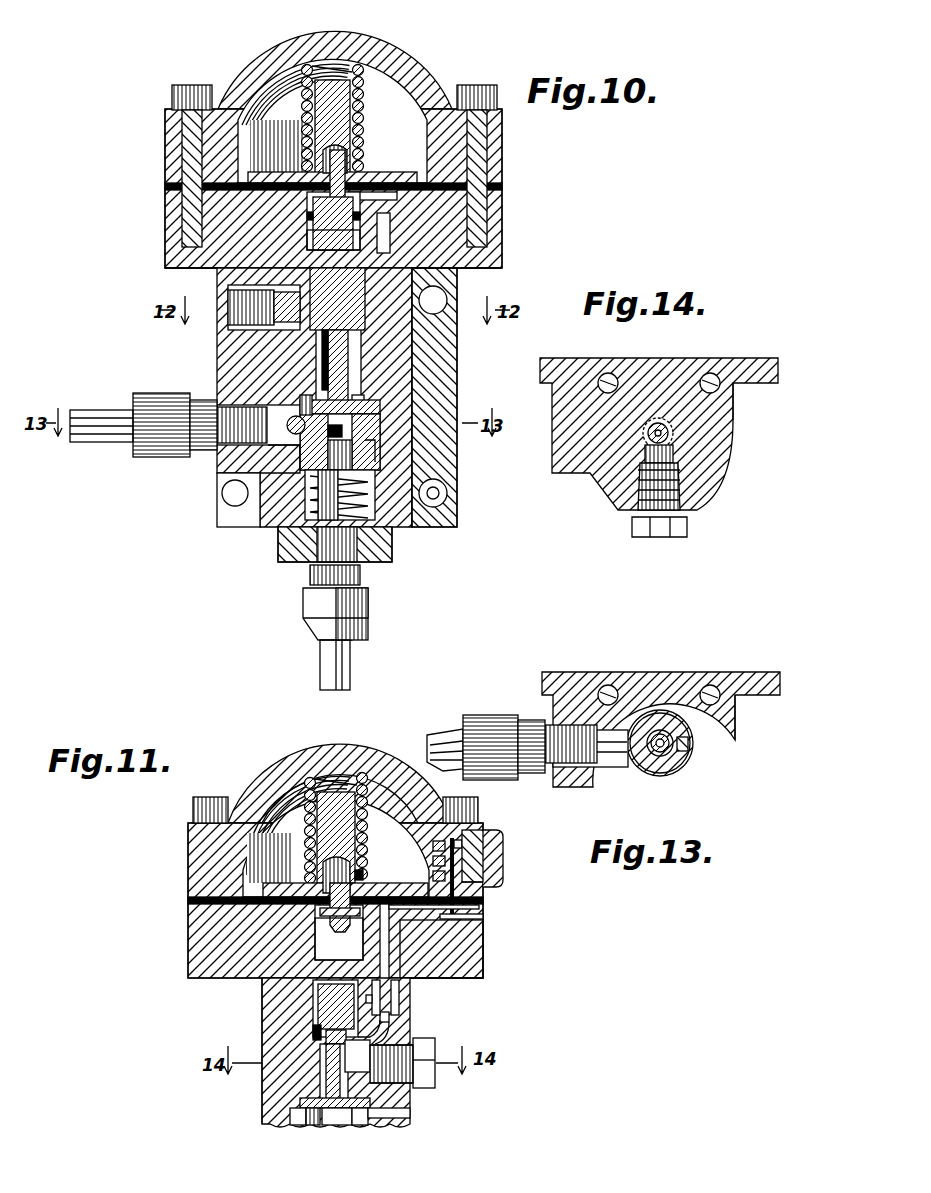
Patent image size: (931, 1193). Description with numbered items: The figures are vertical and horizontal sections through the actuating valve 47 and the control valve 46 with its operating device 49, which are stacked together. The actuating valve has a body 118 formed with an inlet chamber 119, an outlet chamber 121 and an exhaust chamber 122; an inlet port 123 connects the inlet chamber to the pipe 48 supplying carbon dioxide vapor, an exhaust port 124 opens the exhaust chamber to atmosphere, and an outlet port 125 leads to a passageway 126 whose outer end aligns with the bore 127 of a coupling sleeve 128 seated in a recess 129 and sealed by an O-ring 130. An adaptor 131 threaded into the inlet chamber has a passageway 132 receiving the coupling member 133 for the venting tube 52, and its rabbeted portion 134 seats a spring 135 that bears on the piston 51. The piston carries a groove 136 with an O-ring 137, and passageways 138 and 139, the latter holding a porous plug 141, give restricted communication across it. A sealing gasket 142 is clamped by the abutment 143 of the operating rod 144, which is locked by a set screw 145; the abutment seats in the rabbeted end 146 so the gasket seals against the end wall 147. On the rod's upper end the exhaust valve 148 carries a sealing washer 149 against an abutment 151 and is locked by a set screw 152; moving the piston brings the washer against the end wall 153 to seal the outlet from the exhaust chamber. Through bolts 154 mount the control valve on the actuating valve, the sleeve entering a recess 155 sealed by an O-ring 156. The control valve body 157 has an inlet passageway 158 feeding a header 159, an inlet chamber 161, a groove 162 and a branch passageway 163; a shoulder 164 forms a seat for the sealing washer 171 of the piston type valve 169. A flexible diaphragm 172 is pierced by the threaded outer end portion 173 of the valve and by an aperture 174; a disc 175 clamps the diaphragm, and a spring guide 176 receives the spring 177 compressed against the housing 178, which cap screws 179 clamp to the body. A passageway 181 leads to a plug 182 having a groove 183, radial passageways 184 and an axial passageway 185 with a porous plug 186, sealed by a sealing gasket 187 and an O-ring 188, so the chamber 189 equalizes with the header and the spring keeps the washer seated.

In FIG. 10, the control valve 46 is at (162, 243).
In FIG. 11, the control valve 46 is at (185, 962).
In FIG. 10, the actuating valve 47 is at (212, 359).
In FIG. 14, the actuating valve 47 is at (722, 488).
In FIG. 13, the actuating valve 47 is at (736, 780).
In FIG. 11, the actuating valve 47 is at (259, 1128).
In FIG. 10, the pipe 48 is at (100, 443).
In FIG. 13, the pipe 48 is at (448, 733).
In FIG. 10, the operating device 49 is at (419, 57).
In FIG. 11, the operating device 49 is at (299, 746).
In FIG. 10, the piston 51 is at (368, 409).
In FIG. 13, the piston 51 is at (662, 733).
In FIG. 11, the piston 51 is at (408, 1116).
In FIG. 10, the venting tube 52 is at (320, 665).
In FIG. 10, the valve body 118 is at (422, 527).
In FIG. 14, the valve body 118 is at (720, 423).
In FIG. 13, the valve body 118 is at (727, 751).
In FIG. 11, the valve body 118 is at (262, 1024).
In FIG. 10, the inlet chamber 119 is at (375, 480).
In FIG. 11, the inlet chamber 119 is at (310, 1126).
In FIG. 10, the outlet chamber 121 is at (352, 380).
In FIG. 14, the outlet chamber 121 is at (667, 442).
In FIG. 11, the outlet chamber 121 is at (325, 1085).
In FIG. 10, the exhaust chamber 122 is at (430, 326).
In FIG. 11, the exhaust chamber 122 is at (314, 1032).
In FIG. 10, the inlet port 123 is at (275, 453).
In FIG. 13, the inlet port 123 is at (614, 753).
In FIG. 10, the exhaust port 124 is at (293, 309).
In FIG. 14, the outlet port 125 is at (673, 462).
In FIG. 11, the outlet port 125 is at (362, 1075).
In FIG. 11, the passageway 126 is at (404, 1034).
In FIG. 11, the bore 127 is at (398, 997).
In FIG. 11, the coupling sleeve 128 is at (483, 968).
In FIG. 11, the recess 129 is at (385, 996).
In FIG. 11, the O-ring 130 is at (400, 1001).
In FIG. 10, the adaptor 131 is at (392, 545).
In FIG. 10, the passageway 132 is at (310, 568).
In FIG. 10, the coupling member 133 is at (303, 612).
In FIG. 10, the rabbeted portion 134 is at (360, 560).
In FIG. 10, the spring 135 is at (284, 538).
In FIG. 10, the groove 136 is at (362, 455).
In FIG. 10, the O-ring 137 is at (382, 446).
In FIG. 10, the passageway 138 is at (376, 466).
In FIG. 13, the passageway 138 is at (665, 772).
In FIG. 10, the passageway 139 is at (378, 420).
In FIG. 13, the passageway 139 is at (690, 780).
In FIG. 10, the plug 141 is at (382, 430).
In FIG. 13, the plug 141 is at (690, 740).
In FIG. 10, the sealing gasket 142 is at (398, 400).
In FIG. 11, the sealing gasket 142 is at (358, 1126).
In FIG. 10, the abutment 143 is at (290, 412).
In FIG. 14, the abutment 143 is at (655, 418).
In FIG. 11, the abutment 143 is at (334, 1126).
In FIG. 10, the operating rod 144 is at (348, 360).
In FIG. 14, the operating rod 144 is at (668, 418).
In FIG. 11, the operating rod 144 is at (330, 1058).
In FIG. 10, the set screw 145 is at (240, 470).
In FIG. 13, the set screw 145 is at (683, 737).
In FIG. 10, the rabbeted end 146 is at (312, 392).
In FIG. 11, the rabbeted end 146 is at (305, 1100).
In FIG. 10, the end wall 147 is at (190, 430).
In FIG. 11, the end wall 147 is at (290, 1125).
In FIG. 10, the exhaust valve 148 is at (455, 297).
In FIG. 11, the exhaust valve 148 is at (318, 1002).
In FIG. 10, the sealing washer 149 is at (433, 396).
In FIG. 11, the sealing washer 149 is at (390, 1026).
In FIG. 10, the abutment 151 is at (362, 332).
In FIG. 11, the abutment 151 is at (326, 1038).
In FIG. 10, the set screw 152 is at (230, 297).
In FIG. 11, the set screw 152 is at (318, 988).
In FIG. 10, the end wall 153 is at (228, 340).
In FIG. 11, the end wall 153 is at (432, 1052).
In FIG. 10, the through bolts 154 is at (228, 290).
In FIG. 14, the through bolts 154 is at (603, 377).
In FIG. 13, the through bolts 154 is at (608, 686).
In FIG. 11, the recess 155 is at (407, 958).
In FIG. 11, the O-ring 156 is at (407, 950).
In FIG. 10, the body 157 is at (502, 215).
In FIG. 11, the body 157 is at (200, 924).
In FIG. 11, the passageway 158 is at (389, 930).
In FIG. 11, the header 159 is at (483, 917).
In FIG. 10, the inlet chamber 161 is at (350, 220).
In FIG. 11, the inlet chamber 161 is at (323, 933).
In FIG. 10, the groove 162 is at (397, 197).
In FIG. 11, the groove 162 is at (269, 858).
In FIG. 11, the branch passageway 163 is at (483, 907).
In FIG. 10, the shoulder 164 is at (392, 238).
In FIG. 11, the shoulder 164 is at (327, 950).
In FIG. 10, the piston type valve 169 is at (323, 238).
In FIG. 11, the piston type valve 169 is at (307, 912).
In FIG. 10, the sealing washer 171 is at (307, 217).
In FIG. 11, the sealing washer 171 is at (363, 875).
In FIG. 10, the flexible diaphragm 172 is at (200, 185).
In FIG. 11, the flexible diaphragm 172 is at (217, 896).
In FIG. 10, the threaded outer end portion 173 is at (330, 170).
In FIG. 11, the threaded outer end portion 173 is at (318, 856).
In FIG. 11, the aperture 174 is at (500, 875).
In FIG. 10, the disc 175 is at (402, 178).
In FIG. 11, the disc 175 is at (300, 884).
In FIG. 10, the spring guide 176 is at (326, 123).
In FIG. 11, the spring guide 176 is at (355, 827).
In FIG. 10, the spring 177 is at (362, 91).
In FIG. 11, the spring 177 is at (368, 802).
In FIG. 10, the housing 178 is at (430, 82).
In FIG. 11, the housing 178 is at (363, 749).
In FIG. 10, the cap screws 179 is at (198, 85).
In FIG. 11, the cap screws 179 is at (193, 806).
In FIG. 11, the passageway 181 is at (470, 880).
In FIG. 11, the plug 182 is at (485, 858).
In FIG. 11, the groove 183 is at (459, 800).
In FIG. 11, the passageways 184 is at (437, 871).
In FIG. 11, the passageway 185 is at (433, 847).
In FIG. 11, the plug 186 is at (435, 861).
In FIG. 11, the sealing gasket 187 is at (458, 836).
In FIG. 11, the O-ring 188 is at (465, 838).
In FIG. 10, the chamber 189 is at (326, 104).
In FIG. 11, the chamber 189 is at (273, 787).